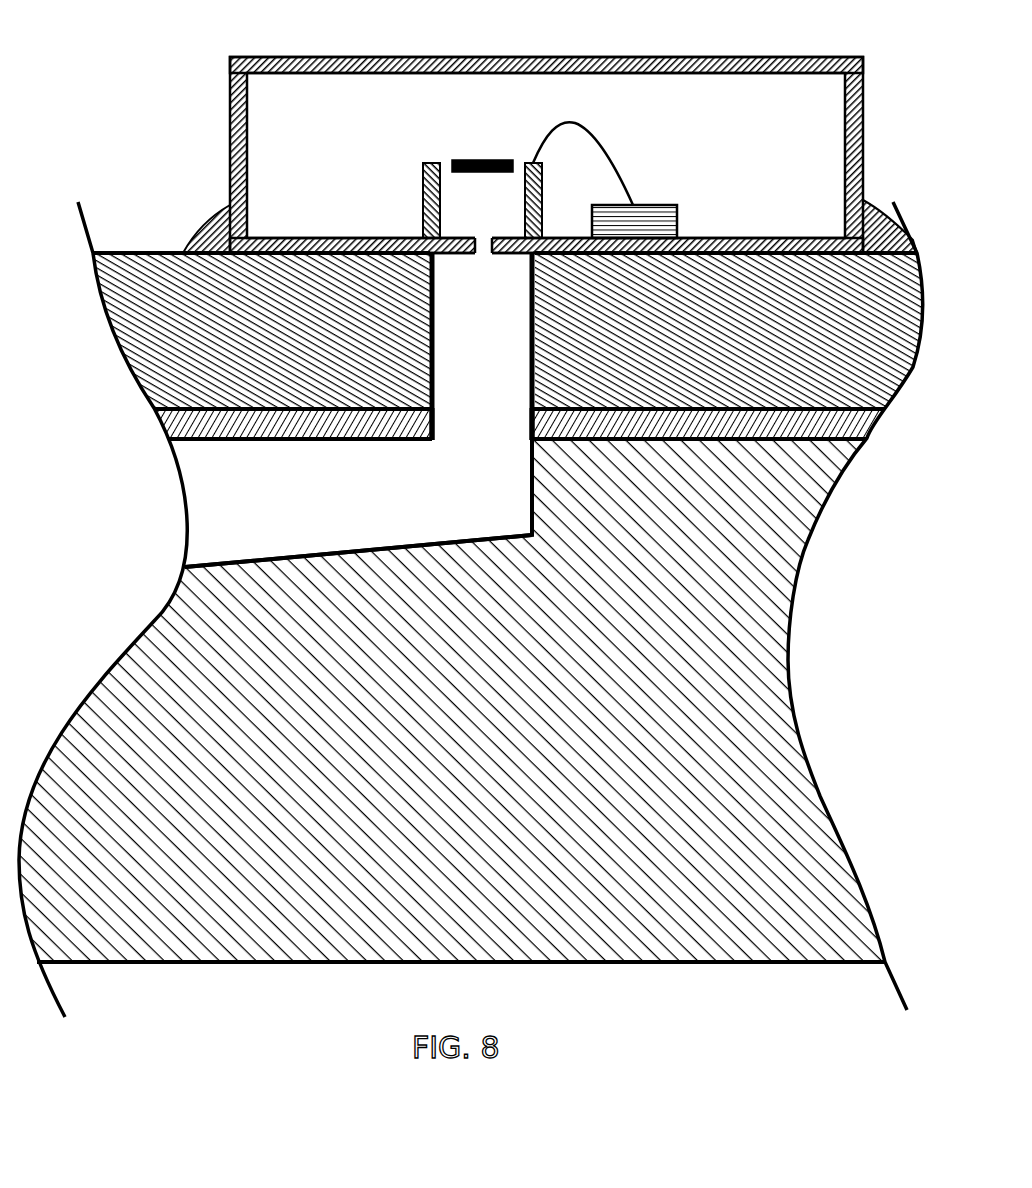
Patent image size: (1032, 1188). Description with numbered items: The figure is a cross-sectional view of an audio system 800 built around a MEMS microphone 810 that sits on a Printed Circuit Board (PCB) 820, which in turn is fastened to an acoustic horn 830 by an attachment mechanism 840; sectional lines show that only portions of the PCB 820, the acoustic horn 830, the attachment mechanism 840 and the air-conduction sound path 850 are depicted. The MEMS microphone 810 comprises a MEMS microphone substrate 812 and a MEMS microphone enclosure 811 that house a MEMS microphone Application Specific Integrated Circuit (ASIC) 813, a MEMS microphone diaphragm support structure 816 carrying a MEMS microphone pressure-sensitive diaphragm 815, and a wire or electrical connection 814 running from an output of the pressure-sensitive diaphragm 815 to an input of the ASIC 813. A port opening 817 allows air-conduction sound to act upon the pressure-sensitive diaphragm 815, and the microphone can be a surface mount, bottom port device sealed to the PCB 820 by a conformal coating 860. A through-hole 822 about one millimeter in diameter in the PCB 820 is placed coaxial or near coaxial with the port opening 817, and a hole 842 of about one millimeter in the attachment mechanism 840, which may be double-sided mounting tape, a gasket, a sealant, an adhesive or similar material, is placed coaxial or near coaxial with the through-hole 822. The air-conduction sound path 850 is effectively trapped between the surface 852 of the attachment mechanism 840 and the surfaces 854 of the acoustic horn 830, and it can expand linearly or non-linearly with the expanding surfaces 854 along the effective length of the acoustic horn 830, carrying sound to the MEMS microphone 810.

The audio system 800 is at (184, 51).
The MEMS microphone 810 is at (342, 115).
The MEMS microphone enclosure 811 is at (770, 58).
The MEMS microphone substrate 812 is at (352, 237).
The MEMS microphone Application Specific Integrated Circuit (ASIC) 813 is at (710, 208).
The wire or electrical connection 814 is at (650, 130).
The MEMS microphone pressure-sensitive diaphragm 815 is at (463, 160).
The MEMS microphone diaphragm support structure 816 is at (424, 205).
The port opening 817 is at (482, 237).
The Printed Circuit Board (PCB) 820 is at (257, 318).
The through-hole 822 is at (530, 287).
The acoustic horn 830 is at (315, 613).
The attachment mechanism 840 is at (178, 436).
The hole 842 is at (530, 418).
The air-conduction sound path 850 is at (282, 531).
The surface of attachment mechanism 852 is at (333, 440).
The surfaces of acoustic horn 854 is at (316, 556).
The conformal coating 860 is at (215, 210).